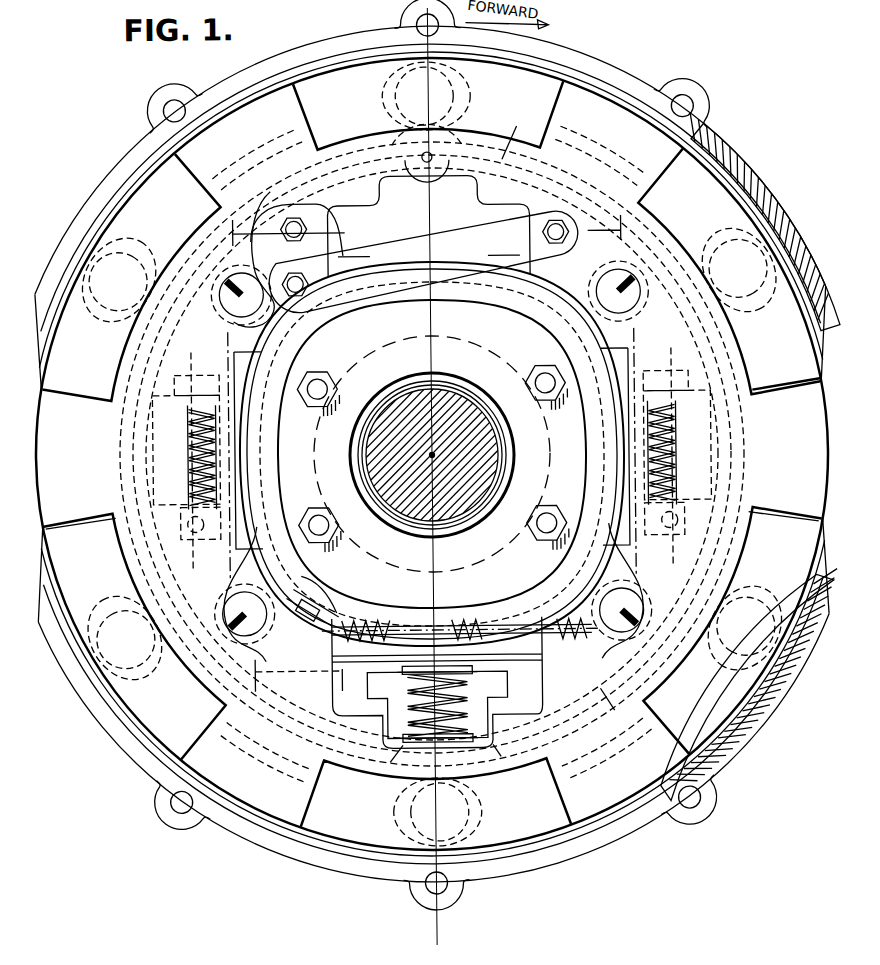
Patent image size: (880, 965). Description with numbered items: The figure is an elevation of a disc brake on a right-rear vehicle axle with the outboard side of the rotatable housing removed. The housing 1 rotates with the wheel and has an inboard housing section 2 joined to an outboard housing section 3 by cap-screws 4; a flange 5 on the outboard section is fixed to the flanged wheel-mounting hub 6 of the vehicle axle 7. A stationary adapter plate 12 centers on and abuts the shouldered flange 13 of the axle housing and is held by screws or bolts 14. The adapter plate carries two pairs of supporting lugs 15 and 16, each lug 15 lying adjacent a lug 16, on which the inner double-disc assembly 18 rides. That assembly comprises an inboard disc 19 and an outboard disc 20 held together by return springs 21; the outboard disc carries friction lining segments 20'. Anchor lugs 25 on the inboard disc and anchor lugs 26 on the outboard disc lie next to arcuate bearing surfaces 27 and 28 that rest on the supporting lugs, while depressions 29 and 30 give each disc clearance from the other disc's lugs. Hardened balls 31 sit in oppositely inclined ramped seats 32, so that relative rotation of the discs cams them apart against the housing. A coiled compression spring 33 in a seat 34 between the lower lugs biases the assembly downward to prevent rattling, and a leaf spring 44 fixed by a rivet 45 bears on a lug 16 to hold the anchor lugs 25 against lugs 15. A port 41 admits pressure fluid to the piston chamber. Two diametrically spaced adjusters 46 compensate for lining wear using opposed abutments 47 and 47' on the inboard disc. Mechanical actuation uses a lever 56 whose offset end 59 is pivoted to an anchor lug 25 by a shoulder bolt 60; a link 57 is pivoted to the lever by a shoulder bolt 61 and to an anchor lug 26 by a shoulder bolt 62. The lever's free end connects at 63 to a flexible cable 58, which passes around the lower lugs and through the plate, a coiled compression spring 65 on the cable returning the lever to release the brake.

The housing 1 is at (590, 852).
The inboard housing section 2 is at (612, 66).
The outboard housing section 3 is at (426, 230).
The cap-screws 4 is at (302, 667).
The flange 5 is at (712, 716).
The wheel-mounting hub 6 is at (432, 455).
The vehicle axle 7 is at (455, 510).
The adapter plate 12 is at (432, 454).
The shouldered flange 13 is at (430, 345).
The screws or bolts 14 is at (318, 400).
The supporting lugs 15 is at (504, 753).
The supporting lugs 16 is at (372, 212).
The double-disc assembly 18 is at (700, 190).
The inboard disc 19 is at (614, 705).
The outboard disc 20 is at (707, 577).
The friction lining segments 20' is at (431, 458).
The return springs 21 is at (605, 313).
The anchor lugs 25 is at (320, 215).
The anchor lugs 26 is at (560, 205).
The arcuate bearing surface 27 is at (345, 168).
The arcuate bearing surface 28 is at (450, 442).
The depression 29 is at (400, 160).
The depression 30 is at (548, 160).
The balls 31 is at (458, 90).
The ramped seats 32 is at (385, 92).
The coiled compression spring 33 is at (467, 690).
The seat 34 is at (405, 690).
The port 41 is at (430, 185).
The leaf spring 44 is at (628, 236).
The rivet 45 is at (590, 207).
The adjusters 46 is at (170, 458).
The abutment 47 is at (432, 453).
The abutment 47' is at (448, 545).
The lever 56 is at (268, 454).
The link 57 is at (420, 258).
The pull-wire or cable 58 is at (390, 628).
The lever end 59 is at (270, 250).
The shoulder bolt 60 is at (285, 200).
The shoulder bolt 61 is at (330, 313).
The shoulder bolt 62 is at (557, 246).
The cable connection 63 is at (300, 563).
The coiled compression spring 65 is at (345, 598).